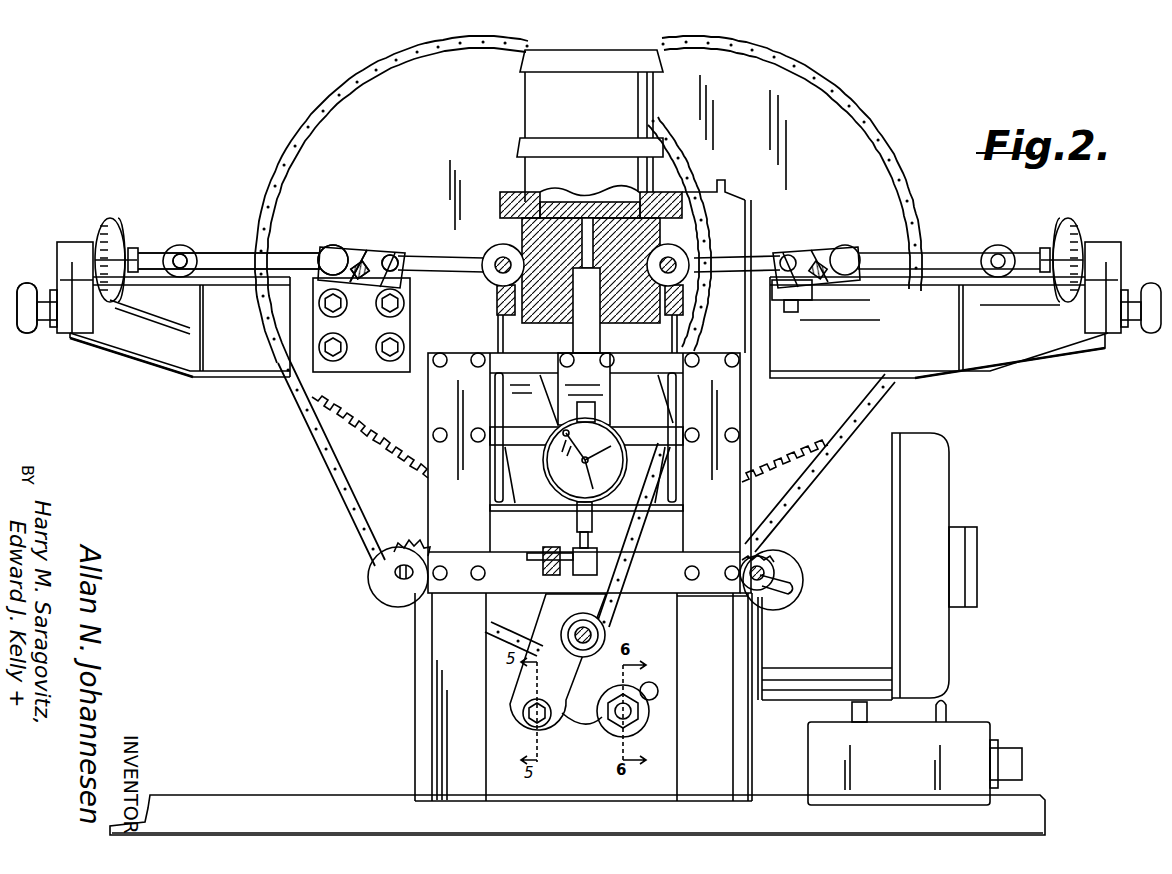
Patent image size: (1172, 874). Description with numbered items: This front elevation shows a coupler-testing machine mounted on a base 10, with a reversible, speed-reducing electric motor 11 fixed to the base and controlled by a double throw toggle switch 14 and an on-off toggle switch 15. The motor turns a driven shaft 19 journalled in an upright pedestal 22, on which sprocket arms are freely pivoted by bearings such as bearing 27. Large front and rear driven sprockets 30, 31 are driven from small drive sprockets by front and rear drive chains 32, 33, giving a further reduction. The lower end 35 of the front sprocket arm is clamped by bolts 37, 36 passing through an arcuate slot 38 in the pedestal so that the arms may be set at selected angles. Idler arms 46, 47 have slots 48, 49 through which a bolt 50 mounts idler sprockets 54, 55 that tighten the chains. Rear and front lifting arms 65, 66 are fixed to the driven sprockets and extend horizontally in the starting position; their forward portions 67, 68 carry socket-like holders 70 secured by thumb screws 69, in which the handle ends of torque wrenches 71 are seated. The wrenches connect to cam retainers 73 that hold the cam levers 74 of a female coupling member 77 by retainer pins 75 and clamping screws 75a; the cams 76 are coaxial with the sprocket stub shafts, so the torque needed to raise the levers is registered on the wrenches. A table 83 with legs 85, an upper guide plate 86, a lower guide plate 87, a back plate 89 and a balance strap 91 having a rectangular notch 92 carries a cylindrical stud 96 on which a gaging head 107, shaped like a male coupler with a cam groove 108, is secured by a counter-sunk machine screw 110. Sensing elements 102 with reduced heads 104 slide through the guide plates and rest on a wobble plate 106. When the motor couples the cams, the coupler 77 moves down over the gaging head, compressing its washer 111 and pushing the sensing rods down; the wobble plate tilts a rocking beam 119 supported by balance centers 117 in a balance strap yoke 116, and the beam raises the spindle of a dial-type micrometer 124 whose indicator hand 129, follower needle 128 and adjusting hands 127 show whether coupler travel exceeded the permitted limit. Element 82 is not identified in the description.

The base 10 is at (288, 795).
The electric motor 11 is at (930, 455).
The double throw toggle switch 14 is at (947, 706).
The on and off toggle switch 15 is at (852, 712).
The driven shaft 19 is at (605, 635).
The upright plate or pedestal 22 is at (490, 700).
The bearing 27 is at (553, 634).
The front driven sprocket 30 is at (338, 123).
The rear driven sprocket 31 is at (851, 128).
The front drive chain 32 is at (343, 493).
The rear drive chain 33 is at (874, 405).
The lower end of front sprocket arm 35 is at (528, 676).
The bolt 36 is at (636, 722).
The bolt 37 is at (530, 718).
The arcuate slot 38 is at (588, 732).
The idler arm 46 is at (390, 575).
The idler arm 47 is at (772, 556).
The slot 48 is at (392, 588).
The slot 49 is at (803, 579).
The bolt 50 is at (412, 560).
The idler sprocket 54 is at (383, 557).
The idler sprocket 55 is at (798, 565).
The rear lifting arm 65 is at (934, 290).
The front lifting arm 66 is at (225, 290).
The forward portion 67 is at (1033, 340).
The forward portion 68 is at (148, 335).
The thumb screw 69 is at (28, 333).
The socket-like holder 70 is at (74, 248).
The torque wrench 71 is at (212, 250).
The cam retainer 73 is at (587, 249).
The cam lever 74 is at (372, 252).
The retainer pin 75 is at (394, 258).
The clamping screw 75a is at (356, 262).
The cam 76 is at (500, 246).
The female coupling member 77 is at (516, 112).
The frame plate 82 is at (415, 725).
The table 83 is at (415, 676).
The leg 85 is at (432, 770).
The upper guide plate 86 is at (646, 365).
The lower guide plate 87 is at (544, 452).
The back plate 89 is at (584, 389).
The balance strap 91 is at (451, 585).
The rectangular notch 92 is at (580, 575).
The cylindrical stud 96 is at (600, 346).
The sensing element 102 is at (503, 409).
The head 104 is at (497, 332).
The wobble plate 106 is at (505, 510).
The gaging head 107 is at (565, 225).
The cam groove 108 is at (684, 308).
The counter-sunk machine screw 110 is at (592, 230).
The washer 111 is at (545, 212).
The balance strap yoke 116 is at (550, 551).
The balance center 117 is at (567, 545).
The rocking beam 119 is at (597, 562).
The dial-type micrometer 124 is at (560, 490).
The adjusting hand 127 is at (612, 445).
The follower needle 128 is at (576, 473).
The indicator hand 129 is at (585, 444).